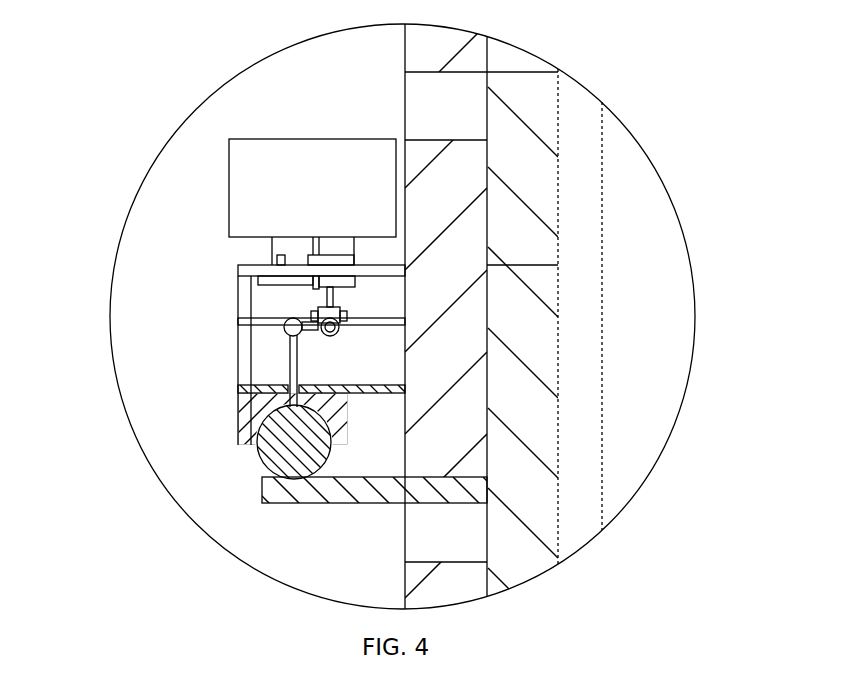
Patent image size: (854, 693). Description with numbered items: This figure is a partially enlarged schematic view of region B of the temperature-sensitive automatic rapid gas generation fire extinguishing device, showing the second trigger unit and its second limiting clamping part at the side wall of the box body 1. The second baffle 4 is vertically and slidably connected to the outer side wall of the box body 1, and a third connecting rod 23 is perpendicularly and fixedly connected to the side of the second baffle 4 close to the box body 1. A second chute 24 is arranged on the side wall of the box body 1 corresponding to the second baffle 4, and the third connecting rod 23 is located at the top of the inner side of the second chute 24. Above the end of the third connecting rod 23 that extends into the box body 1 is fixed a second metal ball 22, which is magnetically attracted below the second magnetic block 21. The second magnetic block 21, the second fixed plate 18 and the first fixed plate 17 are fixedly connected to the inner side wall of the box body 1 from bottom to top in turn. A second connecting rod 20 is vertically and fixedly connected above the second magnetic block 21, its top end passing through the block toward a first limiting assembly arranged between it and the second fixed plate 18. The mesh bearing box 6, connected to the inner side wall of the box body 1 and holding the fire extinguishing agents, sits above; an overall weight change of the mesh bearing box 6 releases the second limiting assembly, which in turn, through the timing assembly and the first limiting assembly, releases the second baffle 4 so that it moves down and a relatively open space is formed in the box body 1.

The partially enlarged region B is at (173, 138).
The box body 1 is at (433, 243).
The second baffle 4 is at (523, 122).
The mesh bearing box 6 is at (279, 203).
The first fixed plate 17 is at (238, 268).
The second fixed plate 18 is at (238, 322).
The second connecting rod 20 is at (290, 357).
The second magnetic block 21 is at (252, 413).
The second metal ball 22 is at (292, 438).
The third connecting rod 23 is at (292, 485).
The second chute 24 is at (418, 545).